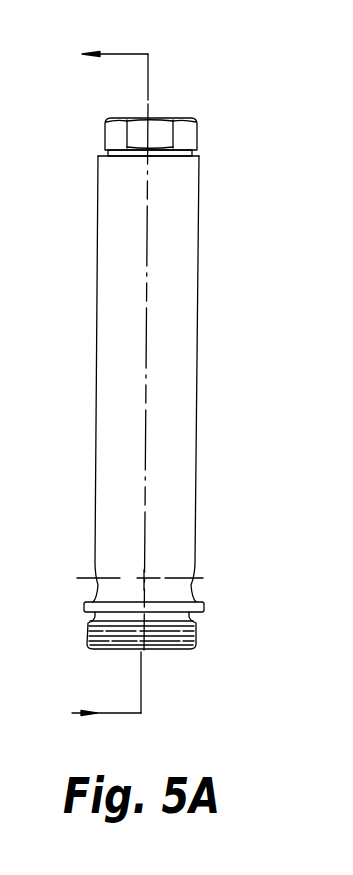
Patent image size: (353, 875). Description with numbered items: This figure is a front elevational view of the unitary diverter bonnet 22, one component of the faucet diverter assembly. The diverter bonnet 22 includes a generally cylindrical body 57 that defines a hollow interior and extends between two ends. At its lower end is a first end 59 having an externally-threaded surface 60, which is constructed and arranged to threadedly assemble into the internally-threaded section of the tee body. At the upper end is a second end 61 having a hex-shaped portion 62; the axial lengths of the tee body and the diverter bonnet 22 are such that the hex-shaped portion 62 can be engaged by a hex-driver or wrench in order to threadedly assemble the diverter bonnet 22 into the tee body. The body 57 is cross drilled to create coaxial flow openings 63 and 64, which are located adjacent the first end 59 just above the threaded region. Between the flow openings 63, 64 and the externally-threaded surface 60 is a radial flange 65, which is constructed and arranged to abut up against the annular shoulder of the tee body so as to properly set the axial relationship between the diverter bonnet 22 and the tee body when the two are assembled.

The diverter bonnet 22 is at (173, 384).
The body 57 is at (98, 362).
The first end 59 is at (148, 647).
The externally-threaded surface 60 is at (133, 638).
The second end 61 is at (198, 167).
The hex-shaped portion 62 is at (110, 135).
The flow opening 63 is at (203, 585).
The flow opening 64 is at (83, 582).
The radial flange 65 is at (203, 608).